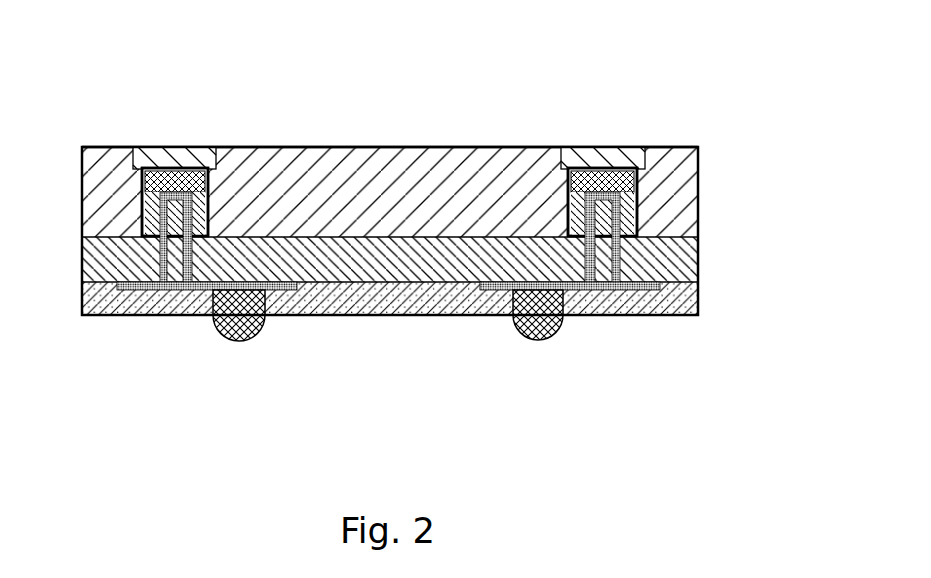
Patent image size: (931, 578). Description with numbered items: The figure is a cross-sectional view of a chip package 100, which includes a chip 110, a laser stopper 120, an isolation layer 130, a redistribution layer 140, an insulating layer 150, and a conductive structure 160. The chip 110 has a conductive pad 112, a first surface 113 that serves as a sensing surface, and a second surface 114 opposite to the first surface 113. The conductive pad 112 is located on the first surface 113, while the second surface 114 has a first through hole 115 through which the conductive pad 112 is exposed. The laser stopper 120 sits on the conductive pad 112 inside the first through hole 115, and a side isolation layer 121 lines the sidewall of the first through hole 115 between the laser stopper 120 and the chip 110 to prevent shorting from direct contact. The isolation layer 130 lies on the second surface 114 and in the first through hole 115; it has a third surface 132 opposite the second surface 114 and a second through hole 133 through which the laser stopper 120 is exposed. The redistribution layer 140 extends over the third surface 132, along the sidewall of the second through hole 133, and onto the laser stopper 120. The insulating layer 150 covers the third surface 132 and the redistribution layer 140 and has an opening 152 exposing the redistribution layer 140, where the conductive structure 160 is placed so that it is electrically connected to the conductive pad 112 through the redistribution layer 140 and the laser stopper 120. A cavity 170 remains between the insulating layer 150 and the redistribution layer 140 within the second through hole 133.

The chip package 100 is at (411, 243).
The chip 110 is at (311, 166).
The conductive pad 112 is at (603, 160).
The first surface 113 is at (406, 140).
The second surface 114 is at (398, 245).
The first through hole 115 is at (646, 213).
The laser stopper 120 is at (640, 184).
The side isolation layer 121 is at (604, 200).
The isolation layer 130 is at (645, 262).
The third surface 132 is at (343, 288).
The second through hole 133 is at (686, 297).
The redistribution layer 140 is at (390, 220).
The insulating layer 150 is at (648, 292).
The opening 152 is at (506, 316).
The conductive structure 160 is at (388, 374).
The cavity 170 is at (574, 212).